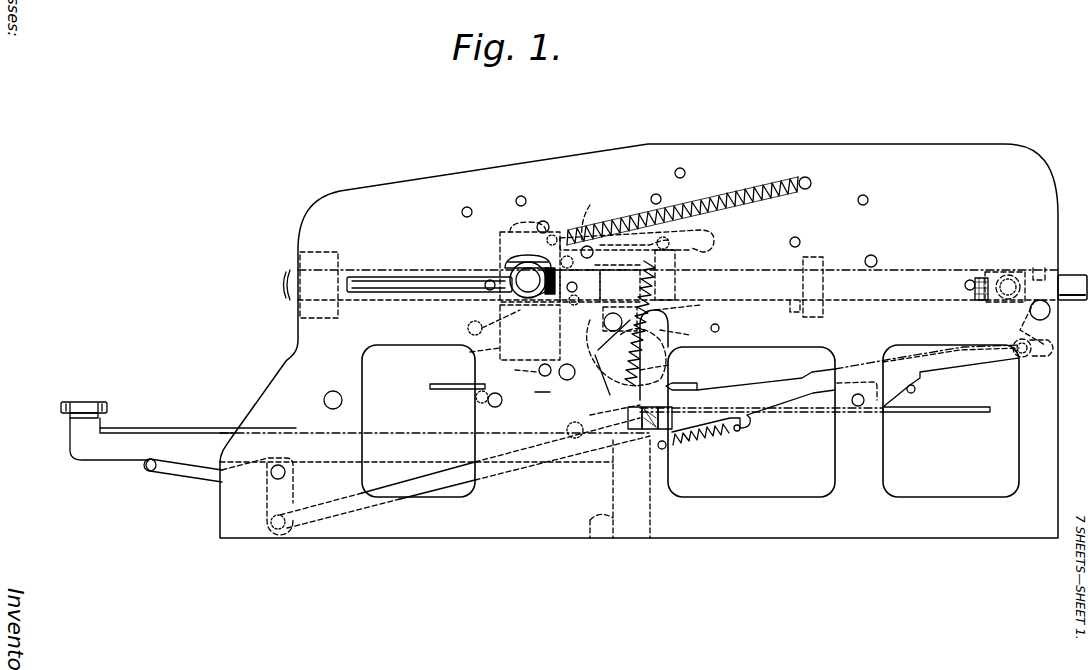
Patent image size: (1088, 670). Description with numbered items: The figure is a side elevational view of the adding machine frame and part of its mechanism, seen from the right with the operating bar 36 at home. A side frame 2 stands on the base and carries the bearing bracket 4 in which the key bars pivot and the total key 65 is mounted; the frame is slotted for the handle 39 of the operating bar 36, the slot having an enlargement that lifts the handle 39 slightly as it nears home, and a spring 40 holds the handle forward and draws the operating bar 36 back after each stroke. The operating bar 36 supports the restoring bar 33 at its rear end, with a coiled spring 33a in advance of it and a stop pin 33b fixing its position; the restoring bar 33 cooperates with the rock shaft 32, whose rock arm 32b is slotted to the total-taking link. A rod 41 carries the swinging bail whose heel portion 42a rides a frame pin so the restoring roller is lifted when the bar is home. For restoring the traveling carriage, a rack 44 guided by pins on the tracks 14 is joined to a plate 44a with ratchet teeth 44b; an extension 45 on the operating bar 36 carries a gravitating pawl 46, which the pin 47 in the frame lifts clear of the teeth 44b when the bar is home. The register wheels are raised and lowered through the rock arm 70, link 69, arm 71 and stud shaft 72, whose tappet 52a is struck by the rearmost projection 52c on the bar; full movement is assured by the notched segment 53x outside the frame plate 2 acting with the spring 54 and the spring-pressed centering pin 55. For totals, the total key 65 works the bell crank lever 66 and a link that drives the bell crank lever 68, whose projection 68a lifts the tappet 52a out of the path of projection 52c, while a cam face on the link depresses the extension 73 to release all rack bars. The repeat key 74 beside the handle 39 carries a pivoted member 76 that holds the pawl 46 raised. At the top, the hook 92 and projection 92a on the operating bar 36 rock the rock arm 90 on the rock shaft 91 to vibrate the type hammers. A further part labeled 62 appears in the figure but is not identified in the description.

The side frame 2 is at (639, 341).
The bearing bracket 4 is at (610, 478).
The tracks 14 is at (857, 408).
The rock shaft 32 is at (1043, 300).
The rock arm 32b is at (1021, 345).
The restoring bar 33 is at (1020, 300).
The spring 33a is at (983, 270).
The stop pin 33b is at (1040, 268).
The operating bar 36 is at (1075, 300).
The handle 39 is at (512, 262).
The spring 40 is at (752, 190).
The rod 41 is at (493, 286).
The heel portion 42a is at (623, 409).
The rack 44 is at (932, 413).
The plate 44a is at (445, 390).
The ratchet teeth 44b is at (700, 384).
The extension 45 is at (494, 322).
The gravitating pawl 46 is at (511, 368).
The pin 47 is at (534, 397).
The tappet 52a is at (686, 312).
The projection 52c is at (792, 297).
The notched segment 53x is at (602, 354).
The spring 54 is at (650, 300).
The centering pin 55 is at (603, 421).
The total lever 62 is at (460, 473).
The total key 65 is at (178, 424).
The bell crank lever 66 is at (182, 478).
The bell crank lever 68 is at (565, 398).
The projection 68a is at (677, 365).
The link 69 is at (678, 262).
The rock arm 70 is at (634, 242).
The arm 71 is at (679, 336).
The stud shaft 72 is at (604, 319).
The extension 73 is at (915, 390).
The repeat key 74 is at (512, 255).
The pivoted member 76 is at (515, 333).
The rock arm 90 is at (600, 257).
The rock shaft 91 is at (583, 291).
The hook 92 is at (728, 238).
The projection 92a is at (570, 214).